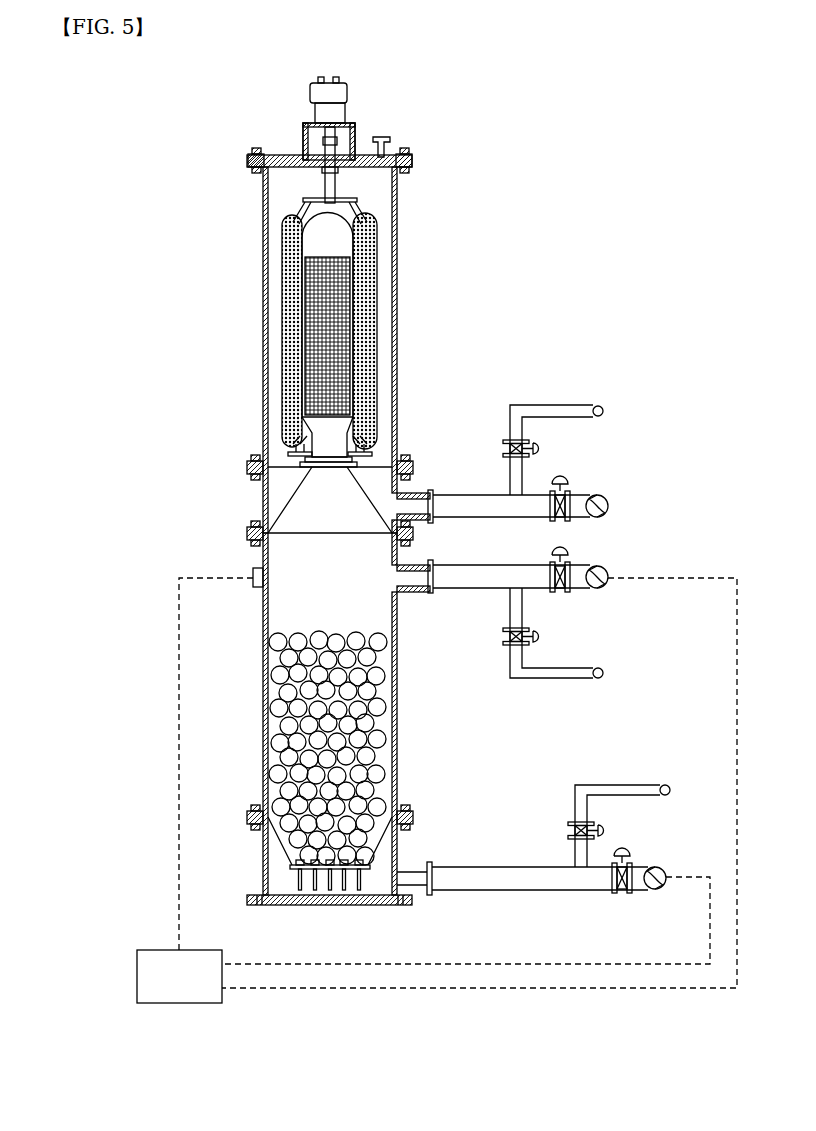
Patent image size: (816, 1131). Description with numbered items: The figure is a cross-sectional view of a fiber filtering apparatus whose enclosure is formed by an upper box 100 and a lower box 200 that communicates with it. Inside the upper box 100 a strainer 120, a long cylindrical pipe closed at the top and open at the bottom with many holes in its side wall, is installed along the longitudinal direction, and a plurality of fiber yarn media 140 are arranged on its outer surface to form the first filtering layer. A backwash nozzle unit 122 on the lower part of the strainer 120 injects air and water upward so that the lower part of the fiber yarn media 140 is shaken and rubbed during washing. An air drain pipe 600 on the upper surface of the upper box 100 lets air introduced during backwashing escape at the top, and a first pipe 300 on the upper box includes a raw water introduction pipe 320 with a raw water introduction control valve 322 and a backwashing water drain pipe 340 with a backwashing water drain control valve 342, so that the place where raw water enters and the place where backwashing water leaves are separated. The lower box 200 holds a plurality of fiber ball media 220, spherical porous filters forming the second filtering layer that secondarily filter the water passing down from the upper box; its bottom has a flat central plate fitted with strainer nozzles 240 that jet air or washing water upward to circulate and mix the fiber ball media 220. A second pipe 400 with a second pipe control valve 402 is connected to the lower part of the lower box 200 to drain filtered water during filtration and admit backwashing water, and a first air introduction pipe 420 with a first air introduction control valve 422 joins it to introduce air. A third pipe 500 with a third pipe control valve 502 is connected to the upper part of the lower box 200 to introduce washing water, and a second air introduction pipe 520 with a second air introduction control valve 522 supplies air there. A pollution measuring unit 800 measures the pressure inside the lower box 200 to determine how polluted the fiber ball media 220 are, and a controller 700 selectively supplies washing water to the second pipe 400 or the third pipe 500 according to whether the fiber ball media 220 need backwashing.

The upper box 100 is at (263, 312).
The strainer 120 is at (340, 240).
The backwash nozzle unit 122 is at (365, 457).
The fiber yarn media 140 is at (378, 298).
The air drain pipe 600 is at (382, 136).
The lower box 200 is at (263, 628).
The fiber ball media 220 is at (383, 700).
The strainer nozzles 240 is at (363, 882).
The pollution measuring unit 800 is at (245, 561).
The first pipe 300 is at (640, 383).
The raw water introduction pipe 320 is at (580, 493).
The raw water introduction control valve 322 is at (568, 521).
The backwashing water drain pipe 340 is at (567, 403).
The backwashing water drain control valve 342 is at (503, 447).
The third pipe 500 is at (500, 570).
The third pipe control valve 502 is at (567, 593).
The second air introduction pipe 520 is at (553, 679).
The second air introduction control valve 522 is at (503, 633).
The second pipe 400 is at (521, 891).
The second pipe control valve 402 is at (628, 897).
The first air introduction pipe 420 is at (620, 784).
The first air introduction control valve 422 is at (568, 823).
The controller 700 is at (192, 962).